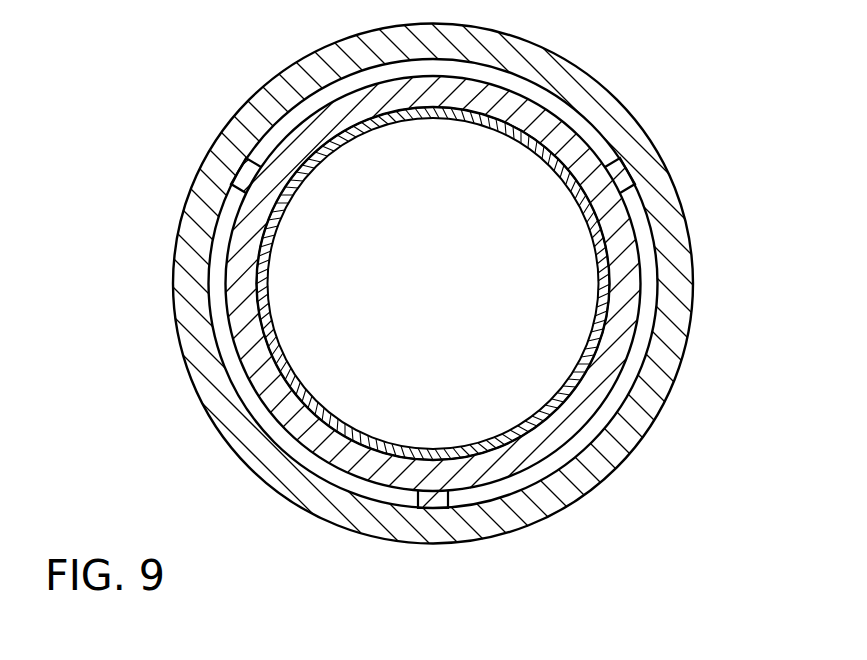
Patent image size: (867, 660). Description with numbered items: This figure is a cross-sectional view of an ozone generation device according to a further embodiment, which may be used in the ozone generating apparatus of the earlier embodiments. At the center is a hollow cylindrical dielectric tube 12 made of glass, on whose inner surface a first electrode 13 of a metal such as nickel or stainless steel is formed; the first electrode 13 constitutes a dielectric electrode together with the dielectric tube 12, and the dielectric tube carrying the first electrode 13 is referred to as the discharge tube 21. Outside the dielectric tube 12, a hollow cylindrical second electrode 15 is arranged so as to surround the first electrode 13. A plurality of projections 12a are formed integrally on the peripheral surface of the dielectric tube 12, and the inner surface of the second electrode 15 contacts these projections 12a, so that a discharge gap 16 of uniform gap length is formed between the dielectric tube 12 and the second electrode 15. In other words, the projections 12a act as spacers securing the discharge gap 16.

The second electrode 15 is at (607, 103).
The discharge gap 16 is at (248, 383).
The projections 12a is at (243, 190).
The dielectric tube 12 is at (274, 342).
The first electrode 13 is at (283, 373).
The discharge tube 21 is at (433, 283).